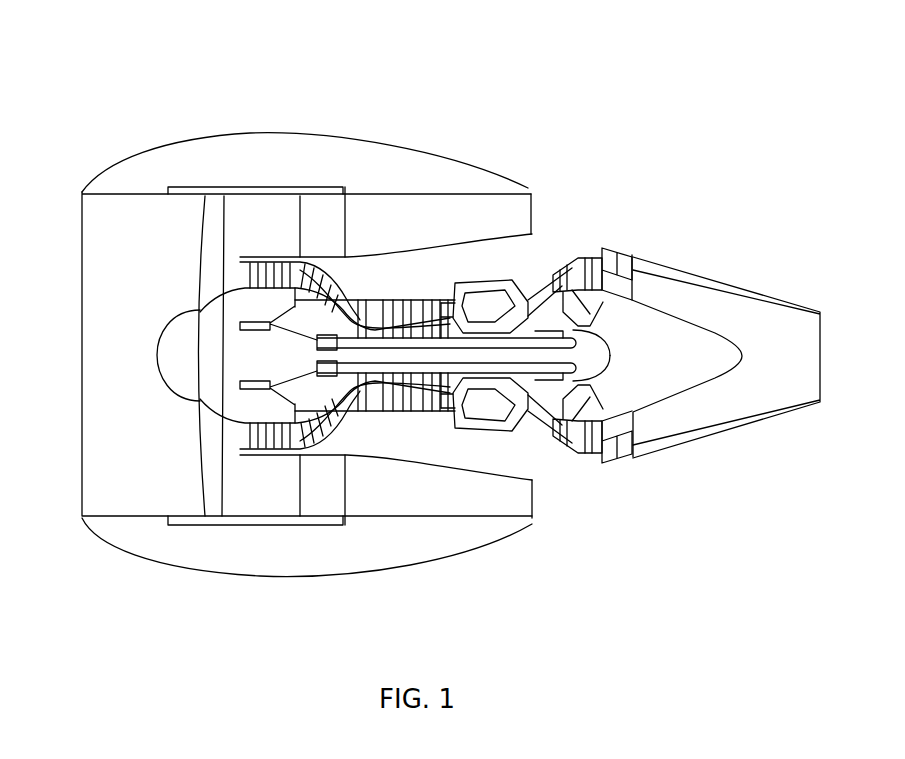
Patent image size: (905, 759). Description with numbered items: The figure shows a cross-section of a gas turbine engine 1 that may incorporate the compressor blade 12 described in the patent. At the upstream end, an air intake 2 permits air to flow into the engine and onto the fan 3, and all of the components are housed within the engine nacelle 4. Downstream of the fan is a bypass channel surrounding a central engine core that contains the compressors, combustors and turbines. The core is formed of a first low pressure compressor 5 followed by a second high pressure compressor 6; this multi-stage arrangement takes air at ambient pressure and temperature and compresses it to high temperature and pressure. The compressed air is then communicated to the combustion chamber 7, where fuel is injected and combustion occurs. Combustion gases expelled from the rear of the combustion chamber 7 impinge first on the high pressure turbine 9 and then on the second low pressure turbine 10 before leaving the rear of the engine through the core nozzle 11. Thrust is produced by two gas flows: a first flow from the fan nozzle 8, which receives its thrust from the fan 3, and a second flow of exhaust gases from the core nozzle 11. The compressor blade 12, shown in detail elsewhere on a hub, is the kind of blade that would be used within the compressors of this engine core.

The gas turbine engine 1 is at (510, 108).
The air intake 2 is at (103, 432).
The fan 3 is at (210, 493).
The engine nacelle 4 is at (163, 545).
The low pressure compressor 5 is at (283, 450).
The high pressure compressor 6 is at (400, 413).
The combustion chamber 7 is at (492, 412).
The fan nozzle 8 is at (522, 505).
The high pressure turbine 9 is at (520, 422).
The low pressure turbine 10 is at (553, 430).
The core nozzle 11 is at (728, 398).
The compressor blade 12 is at (338, 305).